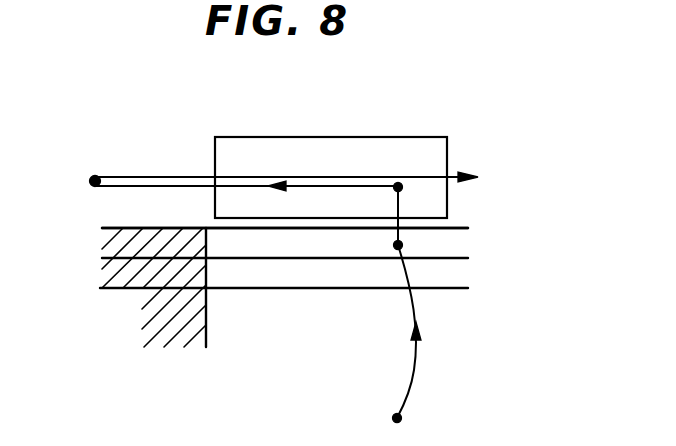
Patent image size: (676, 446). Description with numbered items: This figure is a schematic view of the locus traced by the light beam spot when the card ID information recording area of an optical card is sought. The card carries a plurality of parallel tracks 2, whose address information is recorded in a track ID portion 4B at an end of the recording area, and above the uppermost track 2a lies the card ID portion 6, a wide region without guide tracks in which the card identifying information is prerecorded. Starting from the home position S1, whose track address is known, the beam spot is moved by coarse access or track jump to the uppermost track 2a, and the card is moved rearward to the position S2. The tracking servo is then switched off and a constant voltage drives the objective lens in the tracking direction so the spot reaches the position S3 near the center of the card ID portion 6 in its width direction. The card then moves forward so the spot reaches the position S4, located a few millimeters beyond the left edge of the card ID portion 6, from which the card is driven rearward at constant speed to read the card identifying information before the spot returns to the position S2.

The tracks 2 is at (88, 257).
The uppermost track 2a is at (452, 246).
The track ID portion 4B is at (176, 322).
The card ID portion 6 is at (356, 137).
The home position S1 is at (416, 424).
The position S2 is at (418, 327).
The position S3 is at (416, 214).
The position S4 is at (266, 184).